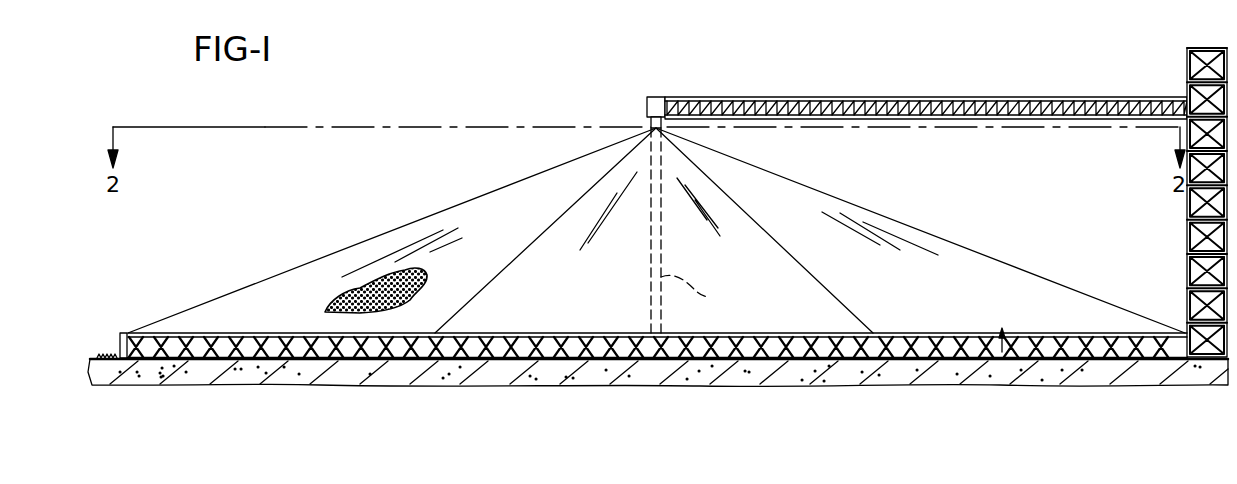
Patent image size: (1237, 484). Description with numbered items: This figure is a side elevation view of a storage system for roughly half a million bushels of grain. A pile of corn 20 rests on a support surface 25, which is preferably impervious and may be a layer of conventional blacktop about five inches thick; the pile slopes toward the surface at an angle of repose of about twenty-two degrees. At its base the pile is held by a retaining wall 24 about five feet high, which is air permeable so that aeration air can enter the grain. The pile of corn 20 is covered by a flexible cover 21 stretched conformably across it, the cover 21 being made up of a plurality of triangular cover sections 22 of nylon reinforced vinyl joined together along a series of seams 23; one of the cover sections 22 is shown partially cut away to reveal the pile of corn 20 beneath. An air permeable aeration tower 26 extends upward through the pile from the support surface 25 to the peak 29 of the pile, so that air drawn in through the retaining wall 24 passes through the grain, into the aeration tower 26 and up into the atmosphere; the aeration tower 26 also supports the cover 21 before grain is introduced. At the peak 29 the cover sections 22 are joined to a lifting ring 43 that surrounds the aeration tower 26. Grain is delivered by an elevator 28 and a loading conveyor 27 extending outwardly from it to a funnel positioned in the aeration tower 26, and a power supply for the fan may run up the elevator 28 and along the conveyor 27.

The pile of corn 20 is at (365, 280).
The flexible cover 21 is at (262, 272).
The cover sections 22 is at (580, 212).
The seams 23 is at (510, 250).
The retaining wall 24 is at (1060, 345).
The support surface 25 is at (123, 333).
The aeration tower 26 is at (710, 297).
The loading conveyor 27 is at (782, 99).
The elevator 28 is at (1187, 65).
The peak 29 is at (650, 99).
The lifting ring 43 is at (650, 128).